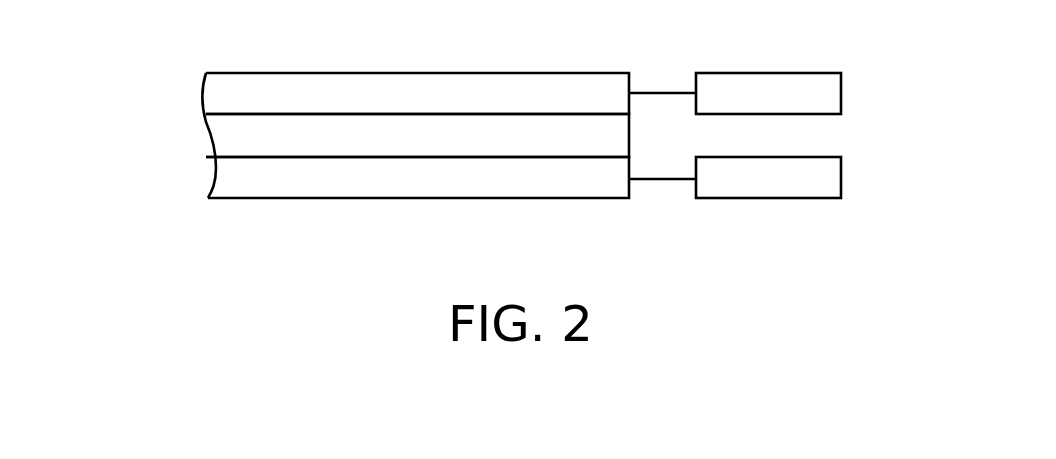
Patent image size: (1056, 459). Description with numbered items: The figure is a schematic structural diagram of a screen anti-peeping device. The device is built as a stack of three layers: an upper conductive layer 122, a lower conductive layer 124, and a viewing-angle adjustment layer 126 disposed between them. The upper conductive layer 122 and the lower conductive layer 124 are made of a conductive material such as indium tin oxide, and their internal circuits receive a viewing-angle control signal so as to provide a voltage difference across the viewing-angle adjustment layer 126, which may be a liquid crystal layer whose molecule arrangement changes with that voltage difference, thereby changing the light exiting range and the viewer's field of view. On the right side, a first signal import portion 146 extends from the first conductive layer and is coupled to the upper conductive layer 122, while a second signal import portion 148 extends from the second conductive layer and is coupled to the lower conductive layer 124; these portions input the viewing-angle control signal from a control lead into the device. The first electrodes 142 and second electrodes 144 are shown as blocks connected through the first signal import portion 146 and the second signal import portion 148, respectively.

The upper conductive layer 122 is at (222, 93).
The viewing-angle adjustment layer 126 is at (223, 138).
The lower conductive layer 124 is at (222, 181).
The first signal import portion 146 is at (660, 92).
The second signal import portion 148 is at (660, 180).
The first electrode 142 is at (841, 92).
The second electrode 144 is at (841, 178).